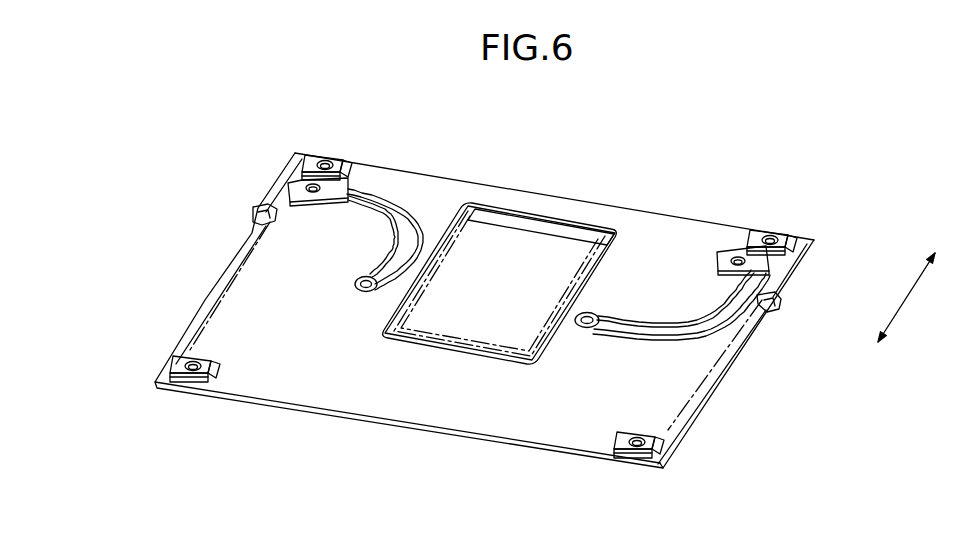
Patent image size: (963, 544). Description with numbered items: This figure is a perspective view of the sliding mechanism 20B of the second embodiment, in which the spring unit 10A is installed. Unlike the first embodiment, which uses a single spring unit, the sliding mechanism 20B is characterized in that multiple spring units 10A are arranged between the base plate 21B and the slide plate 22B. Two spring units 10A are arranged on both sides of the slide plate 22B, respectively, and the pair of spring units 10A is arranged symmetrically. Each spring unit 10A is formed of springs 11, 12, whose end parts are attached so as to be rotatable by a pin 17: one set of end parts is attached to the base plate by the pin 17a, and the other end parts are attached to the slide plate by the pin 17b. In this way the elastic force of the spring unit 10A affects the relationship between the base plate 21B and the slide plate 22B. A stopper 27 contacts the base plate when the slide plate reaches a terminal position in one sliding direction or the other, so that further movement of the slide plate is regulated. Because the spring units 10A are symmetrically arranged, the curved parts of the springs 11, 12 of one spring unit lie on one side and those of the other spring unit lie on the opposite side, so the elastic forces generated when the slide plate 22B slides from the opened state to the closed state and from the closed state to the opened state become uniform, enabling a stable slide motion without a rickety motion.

The sliding mechanism 20B is at (651, 108).
The slide plate 22B is at (417, 420).
The base plate 21B is at (270, 168).
The stopper 27 is at (350, 160).
The pin 17 is at (544, 258).
The pin 17a is at (313, 183).
The pin 17b is at (362, 292).
The spring unit 10A is at (569, 266).
The spring 11 is at (391, 220).
The spring 12 is at (426, 224).